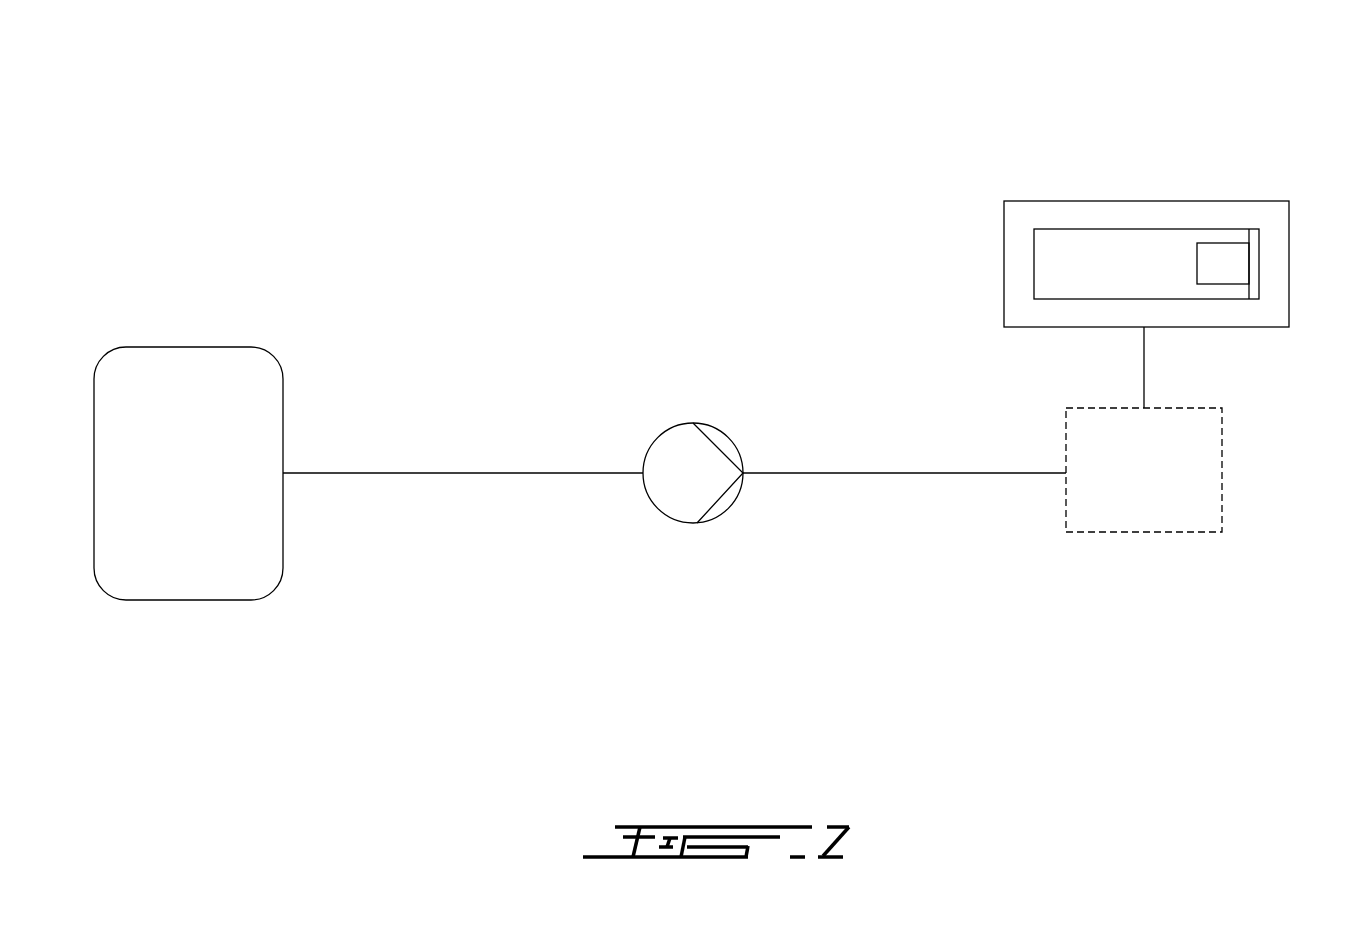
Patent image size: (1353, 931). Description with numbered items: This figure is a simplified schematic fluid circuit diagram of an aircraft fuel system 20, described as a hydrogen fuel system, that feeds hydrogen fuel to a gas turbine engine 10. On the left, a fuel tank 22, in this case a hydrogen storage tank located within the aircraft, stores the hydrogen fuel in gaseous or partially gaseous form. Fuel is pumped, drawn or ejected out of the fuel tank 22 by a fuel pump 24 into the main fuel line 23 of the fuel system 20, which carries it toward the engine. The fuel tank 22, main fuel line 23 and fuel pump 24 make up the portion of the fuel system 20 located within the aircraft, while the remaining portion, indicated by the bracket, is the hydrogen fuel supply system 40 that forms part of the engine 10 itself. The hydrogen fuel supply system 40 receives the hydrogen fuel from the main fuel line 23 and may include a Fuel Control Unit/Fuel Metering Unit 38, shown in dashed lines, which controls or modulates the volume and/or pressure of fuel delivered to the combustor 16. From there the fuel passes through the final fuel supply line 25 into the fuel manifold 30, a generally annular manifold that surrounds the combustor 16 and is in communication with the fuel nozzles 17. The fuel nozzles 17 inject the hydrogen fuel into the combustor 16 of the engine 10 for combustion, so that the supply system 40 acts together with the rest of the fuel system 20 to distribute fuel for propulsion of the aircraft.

The gas turbine engine 10 is at (1103, 198).
The combustor 16 is at (1238, 229).
The fuel nozzles 17 is at (1210, 257).
The fuel system 20 is at (337, 213).
The fuel tank 22 is at (181, 405).
The main fuel line 23 is at (413, 473).
The fuel pump 24 is at (677, 424).
The final fuel supply line 25 is at (1145, 368).
The fuel manifold 30 is at (1253, 265).
The Fuel Control Unit/Fuel Metering Unit (FMU) 38 is at (1153, 533).
The hydrogen fuel supply system 40 is at (1315, 668).